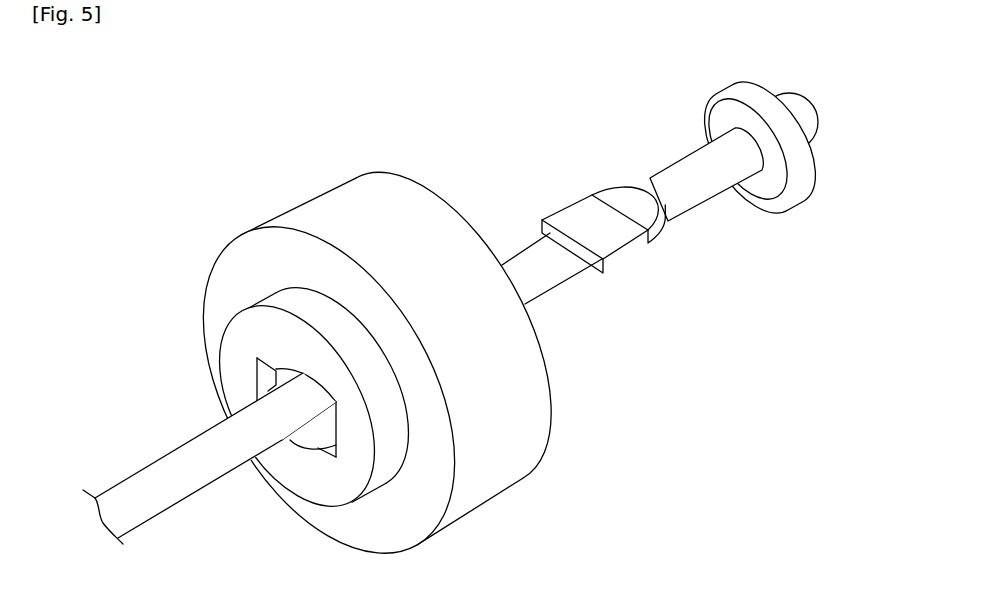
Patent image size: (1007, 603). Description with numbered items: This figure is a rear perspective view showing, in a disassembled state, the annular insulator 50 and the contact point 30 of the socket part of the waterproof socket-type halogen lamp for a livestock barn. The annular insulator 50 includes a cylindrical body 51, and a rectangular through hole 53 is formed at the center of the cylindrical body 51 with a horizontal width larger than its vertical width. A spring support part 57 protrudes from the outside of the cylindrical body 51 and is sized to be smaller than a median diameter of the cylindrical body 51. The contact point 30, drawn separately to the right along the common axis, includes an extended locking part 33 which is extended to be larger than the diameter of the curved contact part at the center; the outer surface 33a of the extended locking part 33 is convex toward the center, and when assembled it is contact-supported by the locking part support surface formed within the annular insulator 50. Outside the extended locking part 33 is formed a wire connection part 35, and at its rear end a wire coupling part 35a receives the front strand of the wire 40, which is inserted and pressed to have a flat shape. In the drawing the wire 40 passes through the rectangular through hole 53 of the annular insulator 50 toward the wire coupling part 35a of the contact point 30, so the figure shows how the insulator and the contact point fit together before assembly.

The contact point 30 is at (691, 178).
The extended locking part 33 is at (793, 112).
The outer surface of the extended locking part 33a is at (771, 177).
The wire connection part 35 is at (692, 185).
The wire coupling part 35a is at (600, 225).
The wire 40 is at (177, 475).
The annular insulator 50 is at (374, 350).
The cylindrical body 51 is at (498, 447).
The rectangular through hole 53 is at (266, 372).
The spring support part 57 is at (317, 485).